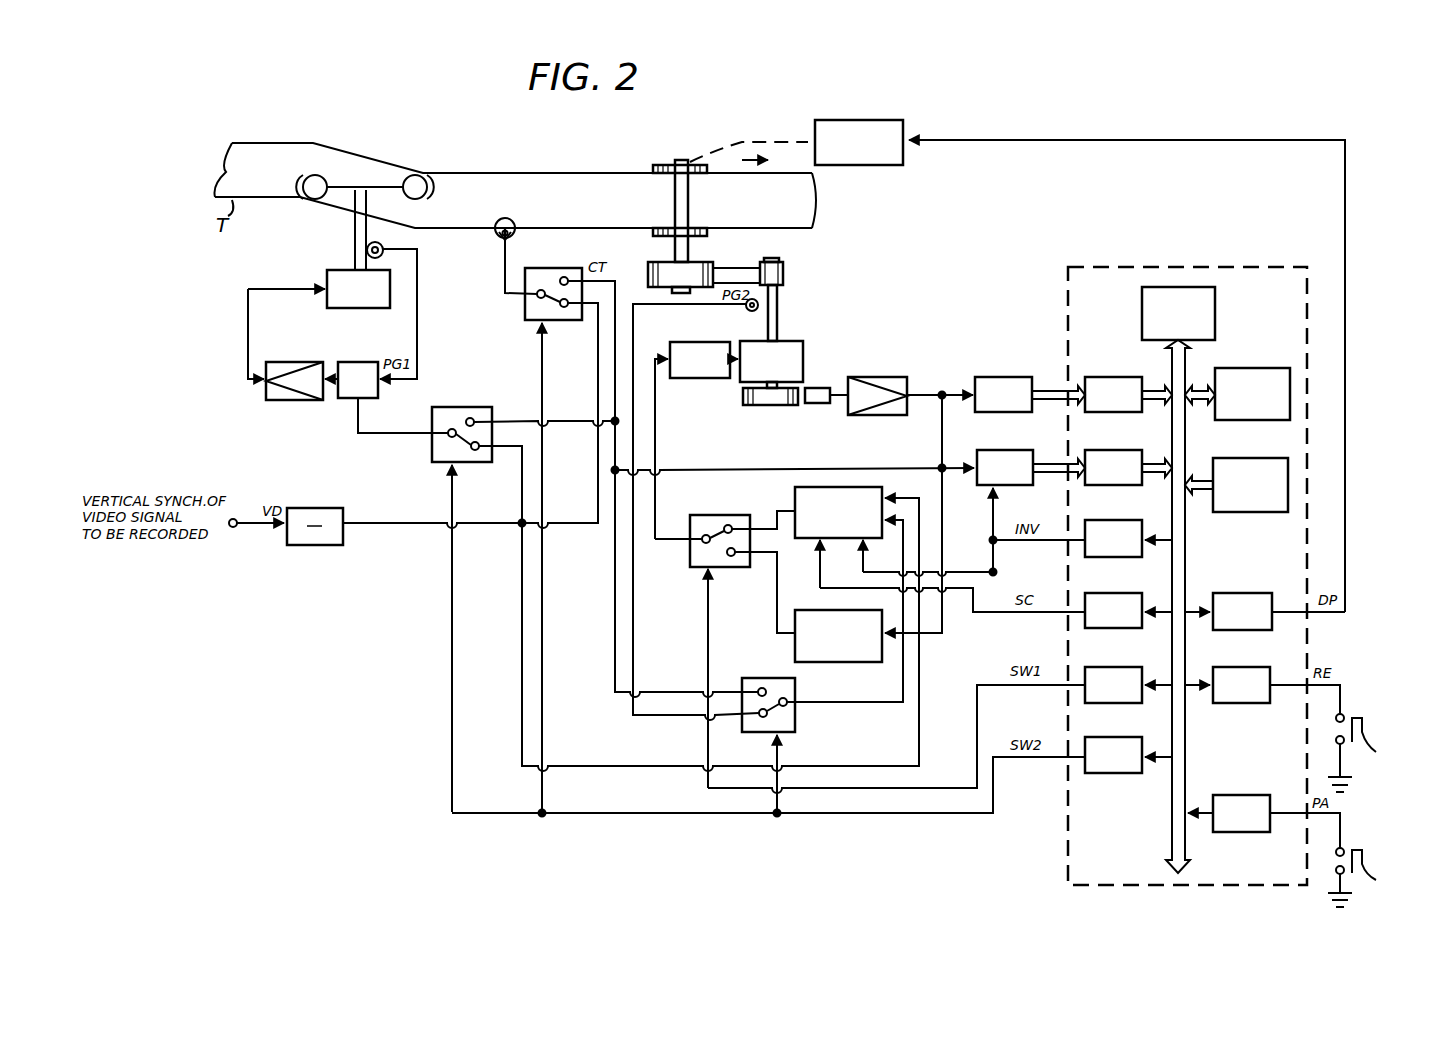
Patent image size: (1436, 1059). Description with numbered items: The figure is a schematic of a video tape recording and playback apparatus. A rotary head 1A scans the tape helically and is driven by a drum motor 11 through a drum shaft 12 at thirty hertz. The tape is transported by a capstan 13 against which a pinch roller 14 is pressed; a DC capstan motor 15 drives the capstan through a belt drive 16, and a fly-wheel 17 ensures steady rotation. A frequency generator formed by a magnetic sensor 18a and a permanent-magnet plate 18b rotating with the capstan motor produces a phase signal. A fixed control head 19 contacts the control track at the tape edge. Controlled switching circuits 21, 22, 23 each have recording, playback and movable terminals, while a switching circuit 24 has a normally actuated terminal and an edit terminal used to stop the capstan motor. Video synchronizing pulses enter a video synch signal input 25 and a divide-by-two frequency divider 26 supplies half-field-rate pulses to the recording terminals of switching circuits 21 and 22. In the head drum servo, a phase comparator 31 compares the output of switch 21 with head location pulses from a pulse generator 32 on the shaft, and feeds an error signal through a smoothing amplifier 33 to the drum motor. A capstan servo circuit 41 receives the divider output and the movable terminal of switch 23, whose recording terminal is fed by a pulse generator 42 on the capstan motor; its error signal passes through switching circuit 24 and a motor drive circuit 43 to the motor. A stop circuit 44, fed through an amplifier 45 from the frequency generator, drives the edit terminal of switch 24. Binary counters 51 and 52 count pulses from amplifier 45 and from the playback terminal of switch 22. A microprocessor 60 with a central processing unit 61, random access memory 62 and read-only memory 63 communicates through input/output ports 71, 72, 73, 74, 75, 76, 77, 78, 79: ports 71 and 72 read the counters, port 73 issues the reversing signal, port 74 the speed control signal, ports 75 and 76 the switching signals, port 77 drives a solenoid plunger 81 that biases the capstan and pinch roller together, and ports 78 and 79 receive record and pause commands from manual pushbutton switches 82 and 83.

The rotary recording and playback head 1A is at (308, 200).
The drum motor 11 is at (388, 308).
The drum shaft 12 is at (355, 240).
The capstan 13 is at (675, 242).
The pinch roller 14 is at (704, 236).
The DC capstan motor 15 is at (803, 348).
The belt drive 16 is at (752, 270).
The fly-wheel 17 is at (650, 268).
The magnetic sensor 18a is at (822, 403).
The permanent-magnet plate 18b is at (775, 405).
The fixed control head 19 is at (497, 236).
The controlled switching circuit 21 is at (461, 464).
The controlled switching circuit 22 is at (552, 322).
The controlled switching circuit 23 is at (755, 735).
The switching circuit 24 is at (720, 568).
The video synch signal input 25 is at (237, 527).
The divide-by-two frequency divider 26 is at (333, 547).
The phase comparator 31 is at (378, 398).
The pulse generator 32 is at (392, 310).
The smoothing amplifier 33 is at (300, 402).
The capstan servo circuit 41 is at (795, 494).
The pulse generator 42 is at (746, 310).
The motor drive circuit 43 is at (690, 380).
The stop circuit 44 is at (845, 664).
The amplifier 45 is at (867, 377).
The binary counter 51 is at (990, 377).
The binary counter 52 is at (998, 450).
The microprocessor 60 is at (1107, 275).
The central processing unit 61 is at (1215, 320).
The random access memory 62 is at (1285, 360).
The read-only memory 63 is at (1260, 458).
The input/output port 71 is at (1112, 412).
The input/output port 72 is at (1112, 485).
The input/output port 73 is at (1112, 557).
The input/output port 74 is at (1112, 628).
The input/output port 75 is at (1112, 703).
The input/output port 76 is at (1112, 773).
The input/output port 77 is at (1245, 630).
The input/output port 78 is at (1245, 703).
The input/output port 79 is at (1245, 832).
The solenoid plunger 81 is at (899, 167).
The manual pushbutton switch 82 is at (1365, 753).
The manual pushbutton switch 83 is at (1365, 877).